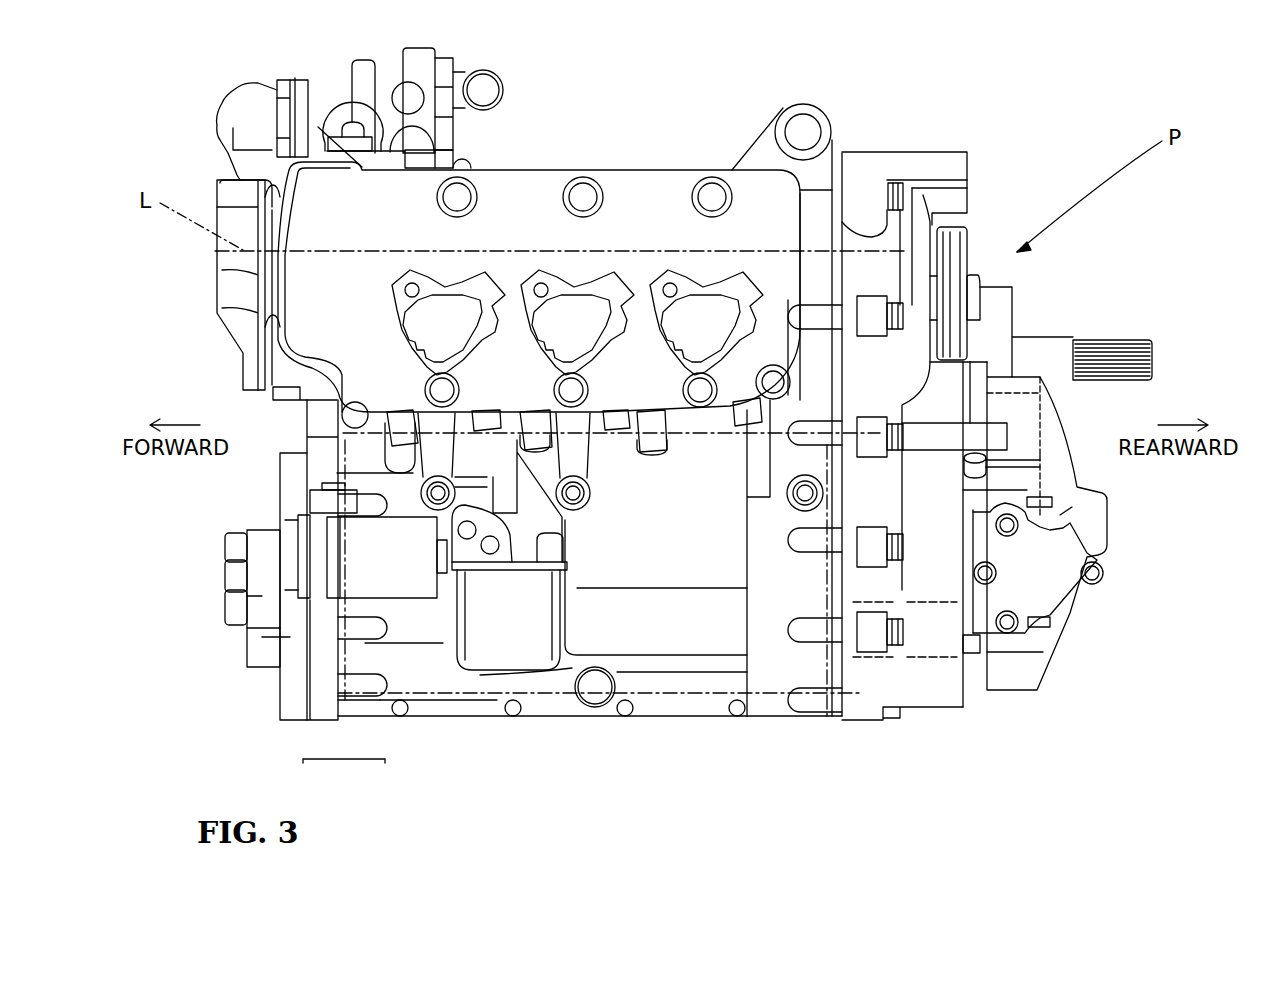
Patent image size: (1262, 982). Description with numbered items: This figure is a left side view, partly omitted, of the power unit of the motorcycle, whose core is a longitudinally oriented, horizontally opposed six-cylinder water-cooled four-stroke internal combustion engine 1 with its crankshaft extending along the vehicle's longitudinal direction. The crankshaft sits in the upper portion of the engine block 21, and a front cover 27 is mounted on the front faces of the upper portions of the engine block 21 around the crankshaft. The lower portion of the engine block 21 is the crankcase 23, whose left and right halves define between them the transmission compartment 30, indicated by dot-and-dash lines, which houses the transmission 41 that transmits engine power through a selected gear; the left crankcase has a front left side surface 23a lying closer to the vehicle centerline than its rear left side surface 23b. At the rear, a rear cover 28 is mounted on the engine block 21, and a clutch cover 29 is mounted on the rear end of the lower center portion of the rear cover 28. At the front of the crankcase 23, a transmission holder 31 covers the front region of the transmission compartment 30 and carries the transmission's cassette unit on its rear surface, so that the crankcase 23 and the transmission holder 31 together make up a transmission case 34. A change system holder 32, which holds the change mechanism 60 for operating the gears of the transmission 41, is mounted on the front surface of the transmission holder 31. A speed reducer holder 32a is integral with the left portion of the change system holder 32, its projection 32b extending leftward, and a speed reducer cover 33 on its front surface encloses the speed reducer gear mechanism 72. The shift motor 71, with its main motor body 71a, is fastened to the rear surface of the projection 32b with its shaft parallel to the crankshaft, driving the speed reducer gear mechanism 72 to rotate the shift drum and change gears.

The internal combustion engine 1 is at (548, 170).
The engine block 21 is at (817, 222).
The crankcase 23 is at (387, 710).
The front left side surface 23a is at (430, 617).
The rear left side surface 23b is at (647, 610).
The front cover 27 is at (235, 195).
The rear cover 28 is at (903, 650).
The clutch cover 29 is at (1017, 665).
The transmission compartment 30 is at (662, 520).
The transmission holder 31 is at (322, 703).
The change system holder 32 is at (285, 687).
The speed reducer holder 32a is at (290, 562).
The projection 32b is at (297, 556).
The speed reducer cover 33 is at (257, 650).
The transmission case 34 is at (344, 772).
The transmission 41 is at (697, 530).
The change mechanism 60 is at (290, 637).
The shift motor 71 is at (400, 597).
The main motor body 71a is at (423, 585).
The speed reducer gear mechanism 72 is at (263, 598).